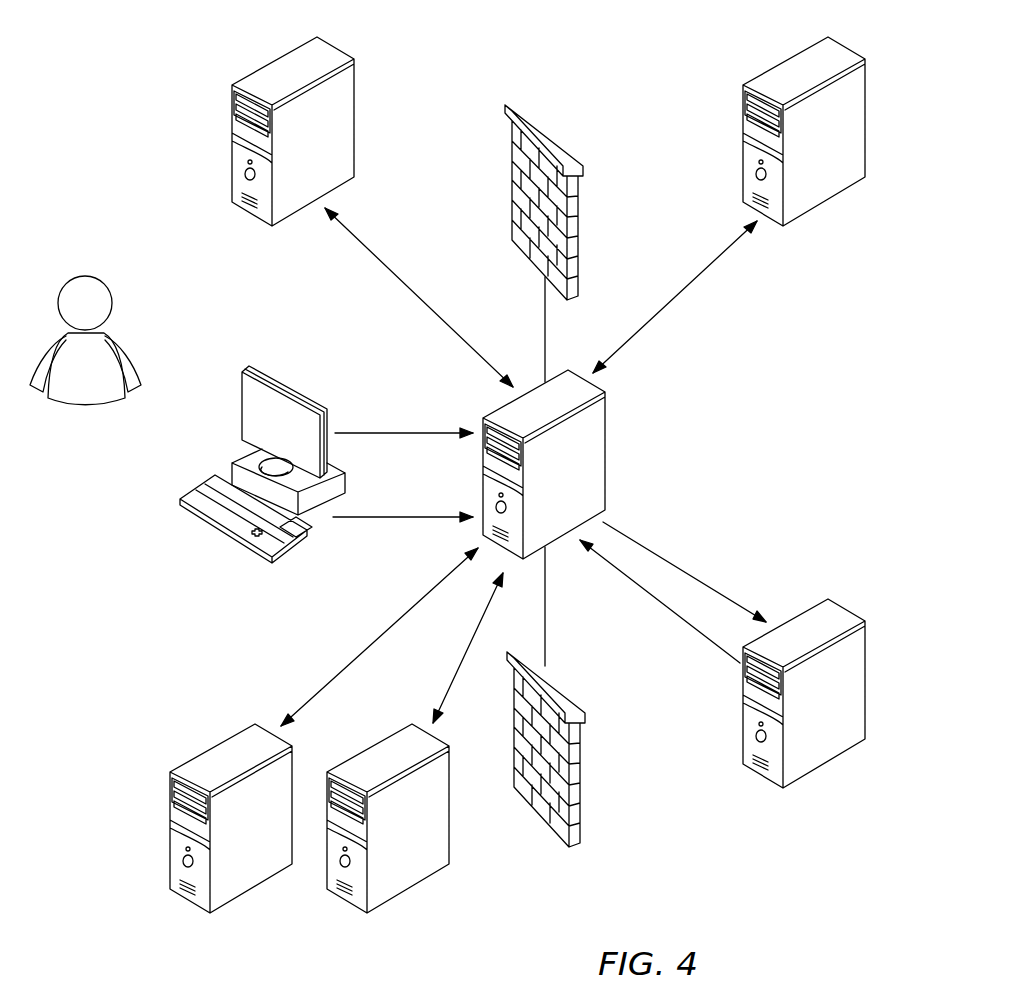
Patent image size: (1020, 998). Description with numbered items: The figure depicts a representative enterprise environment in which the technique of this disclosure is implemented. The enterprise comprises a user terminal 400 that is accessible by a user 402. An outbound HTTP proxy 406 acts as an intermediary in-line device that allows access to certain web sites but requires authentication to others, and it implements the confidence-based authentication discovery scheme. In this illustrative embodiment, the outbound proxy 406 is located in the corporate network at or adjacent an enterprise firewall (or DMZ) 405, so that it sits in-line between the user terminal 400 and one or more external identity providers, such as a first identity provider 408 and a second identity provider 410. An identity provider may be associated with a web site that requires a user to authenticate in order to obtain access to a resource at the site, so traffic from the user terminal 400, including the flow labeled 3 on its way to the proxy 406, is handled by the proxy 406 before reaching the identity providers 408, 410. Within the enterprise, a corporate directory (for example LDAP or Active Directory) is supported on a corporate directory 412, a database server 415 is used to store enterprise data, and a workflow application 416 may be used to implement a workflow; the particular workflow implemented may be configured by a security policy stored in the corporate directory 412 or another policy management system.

The request flow from user terminal to outbound proxy 3 is at (403, 506).
The user terminal 400 is at (288, 390).
The user 402 is at (85, 277).
The enterprise firewall 405 is at (555, 138).
The outbound HTTP proxy 406 is at (606, 450).
The first identity provider (IdP) 408 is at (787, 61).
The second identity provider (IdP) 410 is at (805, 612).
The corporate directory 412 is at (170, 856).
The database server 415 is at (450, 835).
The workflow application 416 is at (276, 60).